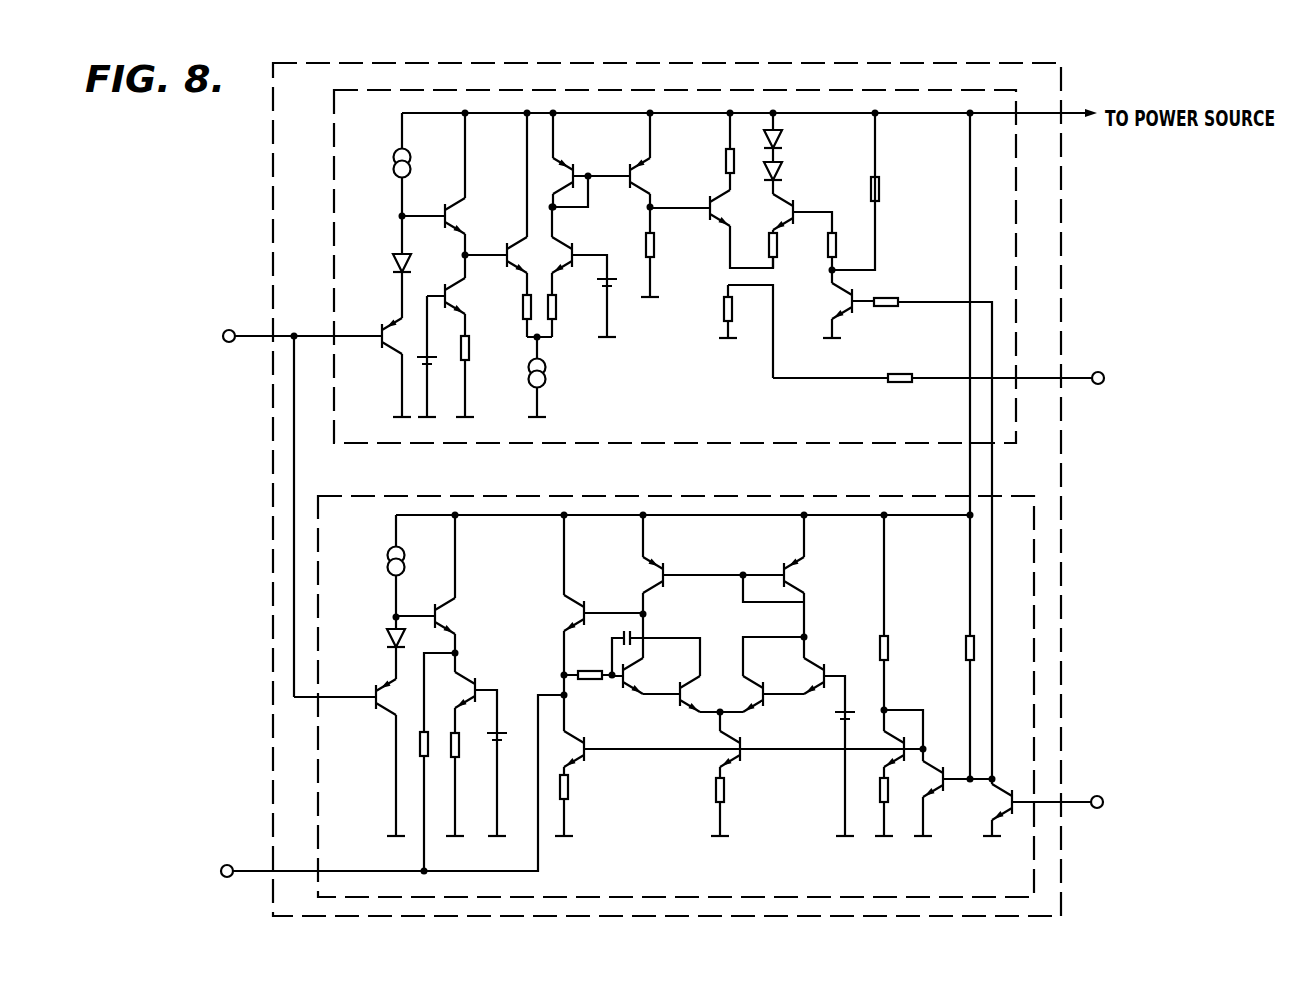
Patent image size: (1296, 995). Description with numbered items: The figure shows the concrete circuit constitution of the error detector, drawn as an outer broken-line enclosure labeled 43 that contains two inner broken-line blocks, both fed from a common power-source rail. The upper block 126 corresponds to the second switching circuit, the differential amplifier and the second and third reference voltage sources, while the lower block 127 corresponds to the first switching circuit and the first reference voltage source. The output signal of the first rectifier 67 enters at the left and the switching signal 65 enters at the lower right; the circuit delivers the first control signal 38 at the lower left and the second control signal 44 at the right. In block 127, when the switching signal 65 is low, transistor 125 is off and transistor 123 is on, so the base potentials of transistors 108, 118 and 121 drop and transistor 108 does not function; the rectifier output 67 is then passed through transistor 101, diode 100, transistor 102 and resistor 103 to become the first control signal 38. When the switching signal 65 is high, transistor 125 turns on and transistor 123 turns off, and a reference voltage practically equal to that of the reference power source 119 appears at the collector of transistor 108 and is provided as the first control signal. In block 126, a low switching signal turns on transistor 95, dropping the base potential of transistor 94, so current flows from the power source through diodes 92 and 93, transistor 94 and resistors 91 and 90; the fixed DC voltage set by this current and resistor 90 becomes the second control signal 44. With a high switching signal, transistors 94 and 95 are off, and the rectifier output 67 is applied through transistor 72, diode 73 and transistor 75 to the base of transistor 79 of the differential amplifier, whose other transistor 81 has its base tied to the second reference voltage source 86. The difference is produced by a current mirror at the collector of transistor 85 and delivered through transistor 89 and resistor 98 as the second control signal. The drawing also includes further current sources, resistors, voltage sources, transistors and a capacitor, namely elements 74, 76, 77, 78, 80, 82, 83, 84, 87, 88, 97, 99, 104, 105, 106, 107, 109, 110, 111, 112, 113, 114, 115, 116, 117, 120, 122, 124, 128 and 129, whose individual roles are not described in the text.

The first control signal 38 is at (221, 868).
The gain control circuit 43 is at (790, 63).
The second control signal 44 is at (1101, 372).
The switching signal 65 is at (1100, 796).
The output signal of the first rectifier 67 is at (229, 330).
The transistor 72 is at (386, 324).
The diode 73 is at (395, 255).
The current source 74 is at (393, 172).
The transistor 75 is at (447, 203).
The transistor / resistor 76 is at (448, 285).
The resistor 77 is at (468, 355).
The voltage source 78 is at (430, 370).
The transistor of the differential amplifier 79 is at (510, 243).
The resistor 80 is at (522, 308).
The other transistor of the differential amplifier 81 is at (572, 252).
The resistor 82 is at (556, 315).
The current source 83 is at (546, 375).
The transistor 84 is at (565, 165).
The transistor 85 is at (633, 190).
The second reference voltage source 86 is at (610, 298).
The resistor 87 is at (653, 240).
The resistor 88 is at (725, 165).
The transistor 89 is at (708, 203).
The resistor 90 is at (724, 305).
The resistor 91 is at (777, 252).
The diode 92 is at (790, 135).
The diode 93 is at (790, 170).
The transistor 94 is at (786, 226).
The transistor 95 is at (840, 325).
The resistor 97 is at (900, 298).
The resistor 98 is at (906, 370).
The current source 99 is at (386, 556).
The diode 100 is at (386, 638).
The transistor 101 is at (370, 706).
The transistor 102 is at (437, 603).
The resistor 103 is at (420, 748).
The transistor 104 is at (478, 678).
The resistor 105 is at (456, 760).
The voltage source 106 is at (500, 730).
The transistor 107 is at (578, 603).
The transistor 108 is at (578, 762).
The resistor 109 is at (572, 792).
The resistor 110 is at (590, 683).
The capacitor 111 is at (620, 638).
The transistor 112 is at (650, 563).
The transistor 113 is at (630, 696).
The transistor 114 is at (788, 565).
The transistor 115 is at (682, 704).
The transistor 116 is at (812, 664).
The transistor 117 is at (750, 706).
The transistor 118 is at (736, 763).
The reference power source 119 is at (840, 716).
The resistor 120 is at (892, 648).
The transistor 121 is at (898, 730).
The resistor 122 is at (878, 800).
The transistor 123 is at (940, 800).
The resistor 124 is at (966, 640).
The transistor 125 is at (1000, 785).
The block 126 is at (870, 446).
The block 127 is at (648, 492).
The resistor 128 is at (836, 242).
The resistor 129 is at (727, 800).